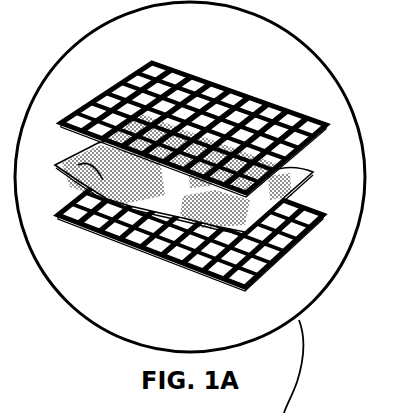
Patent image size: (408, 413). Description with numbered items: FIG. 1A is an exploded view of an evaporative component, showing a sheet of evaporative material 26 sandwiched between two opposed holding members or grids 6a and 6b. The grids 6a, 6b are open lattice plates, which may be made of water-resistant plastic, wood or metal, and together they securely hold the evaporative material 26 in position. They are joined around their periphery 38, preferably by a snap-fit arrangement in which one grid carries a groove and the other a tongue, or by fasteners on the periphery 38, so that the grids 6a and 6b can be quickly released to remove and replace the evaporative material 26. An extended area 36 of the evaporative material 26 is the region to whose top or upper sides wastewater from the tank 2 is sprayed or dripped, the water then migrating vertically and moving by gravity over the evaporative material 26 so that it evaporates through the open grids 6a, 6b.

The tank 2 is at (216, 177).
The holding member or grid 6a is at (318, 124).
The holding member or grid 6b is at (297, 242).
The evaporative material 26 is at (67, 159).
The extended area 36 is at (103, 158).
The periphery 38 is at (256, 99).